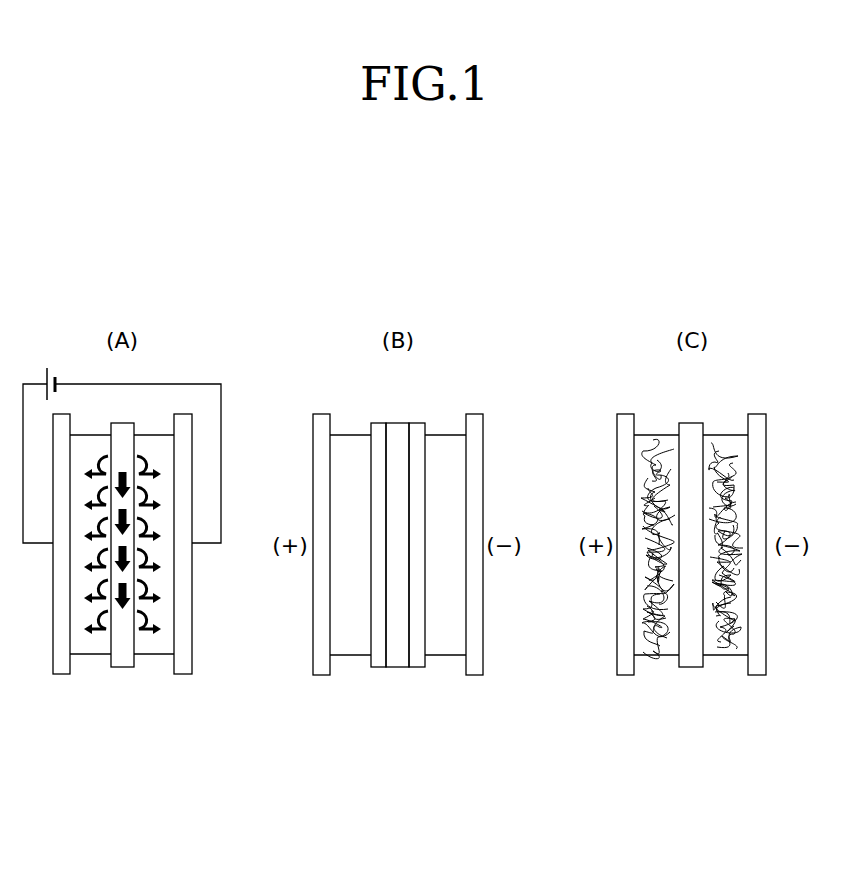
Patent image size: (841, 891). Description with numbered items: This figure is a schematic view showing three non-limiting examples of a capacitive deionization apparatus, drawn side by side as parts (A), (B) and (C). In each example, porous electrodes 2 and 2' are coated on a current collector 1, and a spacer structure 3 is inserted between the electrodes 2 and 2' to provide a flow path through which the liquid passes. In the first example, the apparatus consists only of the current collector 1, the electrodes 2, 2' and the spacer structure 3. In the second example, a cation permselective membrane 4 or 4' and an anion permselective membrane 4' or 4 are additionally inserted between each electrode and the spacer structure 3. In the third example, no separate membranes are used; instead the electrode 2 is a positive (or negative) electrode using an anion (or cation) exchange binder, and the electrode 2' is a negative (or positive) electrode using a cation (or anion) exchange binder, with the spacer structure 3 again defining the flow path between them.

The current collector 1 is at (61, 674).
The porous electrode 2 is at (374, 593).
The porous electrode 2' is at (441, 593).
The spacer structure 3 is at (122, 667).
The cation permselective membrane 4 is at (417, 575).
The anion permselective membrane 4' is at (377, 575).